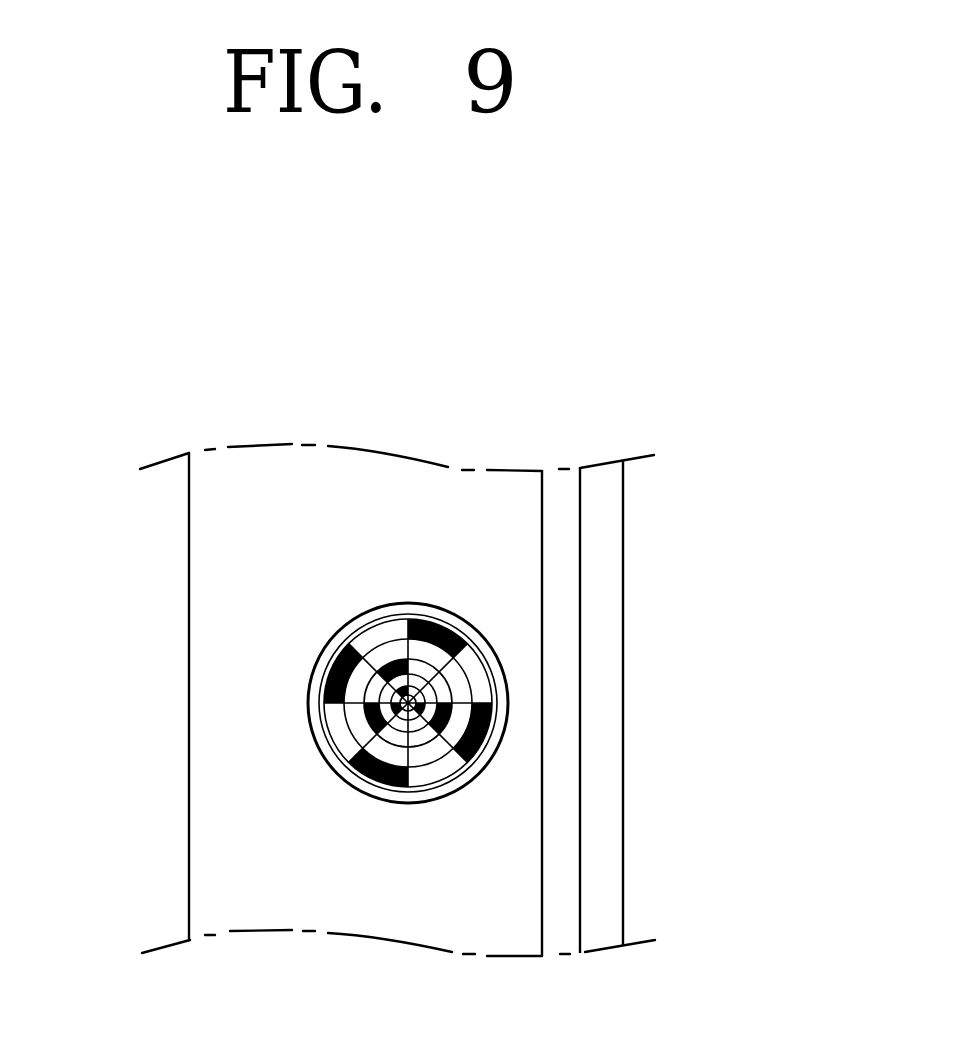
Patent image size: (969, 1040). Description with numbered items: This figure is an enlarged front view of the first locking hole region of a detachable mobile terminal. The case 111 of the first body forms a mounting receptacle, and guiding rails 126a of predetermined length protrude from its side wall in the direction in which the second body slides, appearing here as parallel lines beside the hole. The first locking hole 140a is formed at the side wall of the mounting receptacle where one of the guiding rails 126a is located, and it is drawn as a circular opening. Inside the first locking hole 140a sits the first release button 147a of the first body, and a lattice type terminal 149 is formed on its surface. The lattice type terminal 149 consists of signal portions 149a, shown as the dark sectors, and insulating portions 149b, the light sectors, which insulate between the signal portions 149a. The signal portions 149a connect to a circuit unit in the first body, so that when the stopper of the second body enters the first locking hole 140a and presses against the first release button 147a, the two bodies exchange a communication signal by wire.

The case 111 is at (236, 487).
The guiding rails 126a is at (556, 487).
The first locking hole 140a is at (308, 675).
The first release button 147a is at (485, 634).
The lattice type terminal 149 is at (599, 707).
The signal portions 149a is at (488, 727).
The insulating portions 149b is at (480, 678).